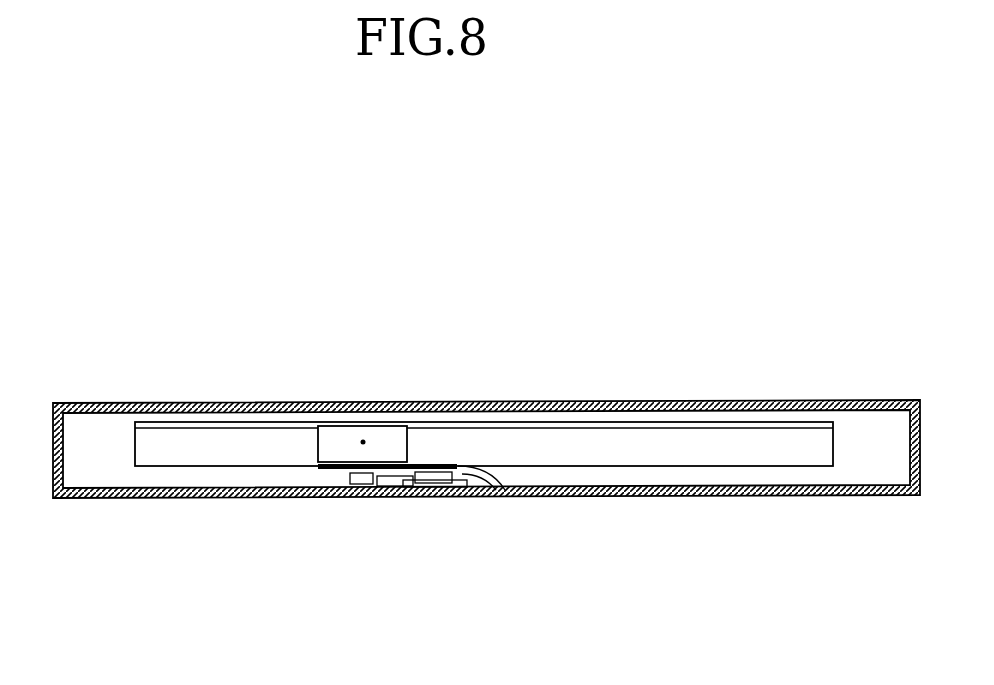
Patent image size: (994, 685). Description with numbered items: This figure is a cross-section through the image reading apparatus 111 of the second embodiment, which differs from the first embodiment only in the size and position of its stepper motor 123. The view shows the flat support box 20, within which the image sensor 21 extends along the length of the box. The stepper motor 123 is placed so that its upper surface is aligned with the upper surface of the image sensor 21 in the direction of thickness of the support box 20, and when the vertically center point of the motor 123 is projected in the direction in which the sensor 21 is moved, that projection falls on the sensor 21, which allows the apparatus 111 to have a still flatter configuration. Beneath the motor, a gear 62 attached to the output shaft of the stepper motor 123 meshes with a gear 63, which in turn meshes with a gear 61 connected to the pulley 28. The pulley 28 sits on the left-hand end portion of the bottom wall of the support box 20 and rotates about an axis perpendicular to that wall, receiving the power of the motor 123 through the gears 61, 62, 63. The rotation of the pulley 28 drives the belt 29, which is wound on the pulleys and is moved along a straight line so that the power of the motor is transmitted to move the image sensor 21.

The support box 20 is at (688, 495).
The image reading apparatus 111 is at (103, 502).
The image sensor 21 is at (193, 453).
The stepper motor 123 is at (397, 440).
The gear 62 is at (348, 491).
The gear 63 is at (397, 489).
The gear 61 is at (450, 486).
The belt 29 is at (485, 486).
The pulley 28 is at (503, 489).